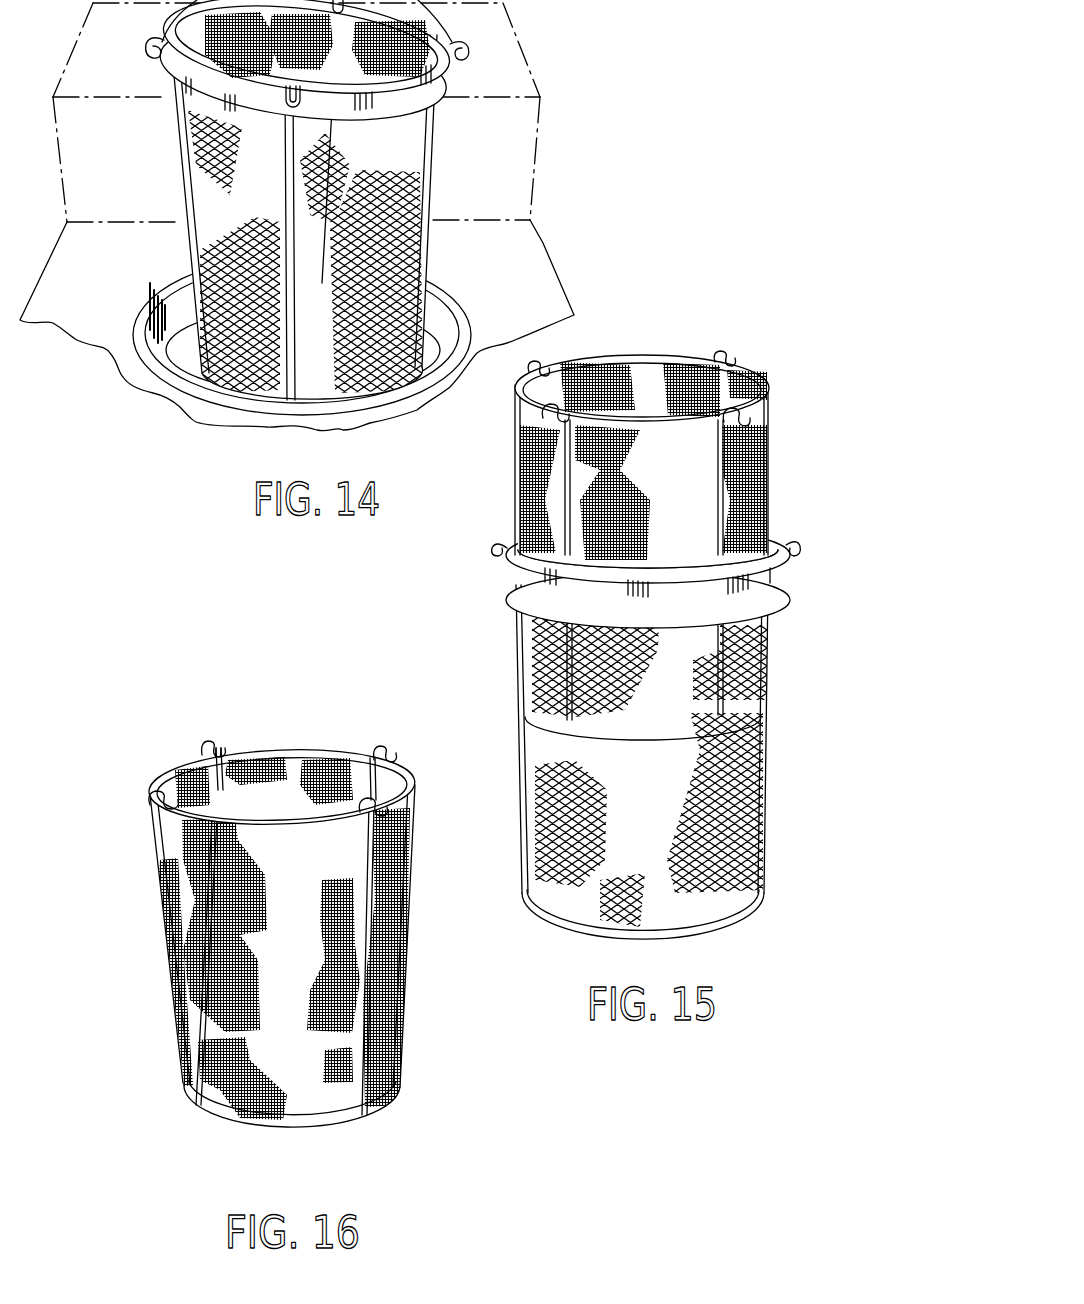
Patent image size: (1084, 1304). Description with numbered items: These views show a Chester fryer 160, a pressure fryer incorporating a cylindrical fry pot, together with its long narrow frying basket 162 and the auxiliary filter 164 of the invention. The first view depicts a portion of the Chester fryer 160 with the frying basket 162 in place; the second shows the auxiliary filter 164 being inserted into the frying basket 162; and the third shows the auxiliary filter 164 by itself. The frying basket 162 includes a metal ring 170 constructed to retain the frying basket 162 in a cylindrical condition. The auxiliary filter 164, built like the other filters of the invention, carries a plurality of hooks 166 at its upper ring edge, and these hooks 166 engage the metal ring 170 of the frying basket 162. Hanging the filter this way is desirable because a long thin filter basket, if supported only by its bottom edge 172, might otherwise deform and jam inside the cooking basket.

In FIG. 14, the Chester fryer 160 is at (537, 70).
In FIG. 14, the frying basket 162 is at (430, 193).
In FIG. 15, the frying basket 162 is at (768, 766).
In FIG. 15, the auxiliary filter 164 is at (778, 467).
In FIG. 16, the auxiliary filter 164 is at (405, 1074).
In FIG. 16, the hooks 166 is at (200, 750).
In FIG. 14, the metal ring 170 is at (167, 80).
In FIG. 15, the metal ring 170 is at (708, 587).
In FIG. 16, the bottom edge 172 is at (213, 1118).